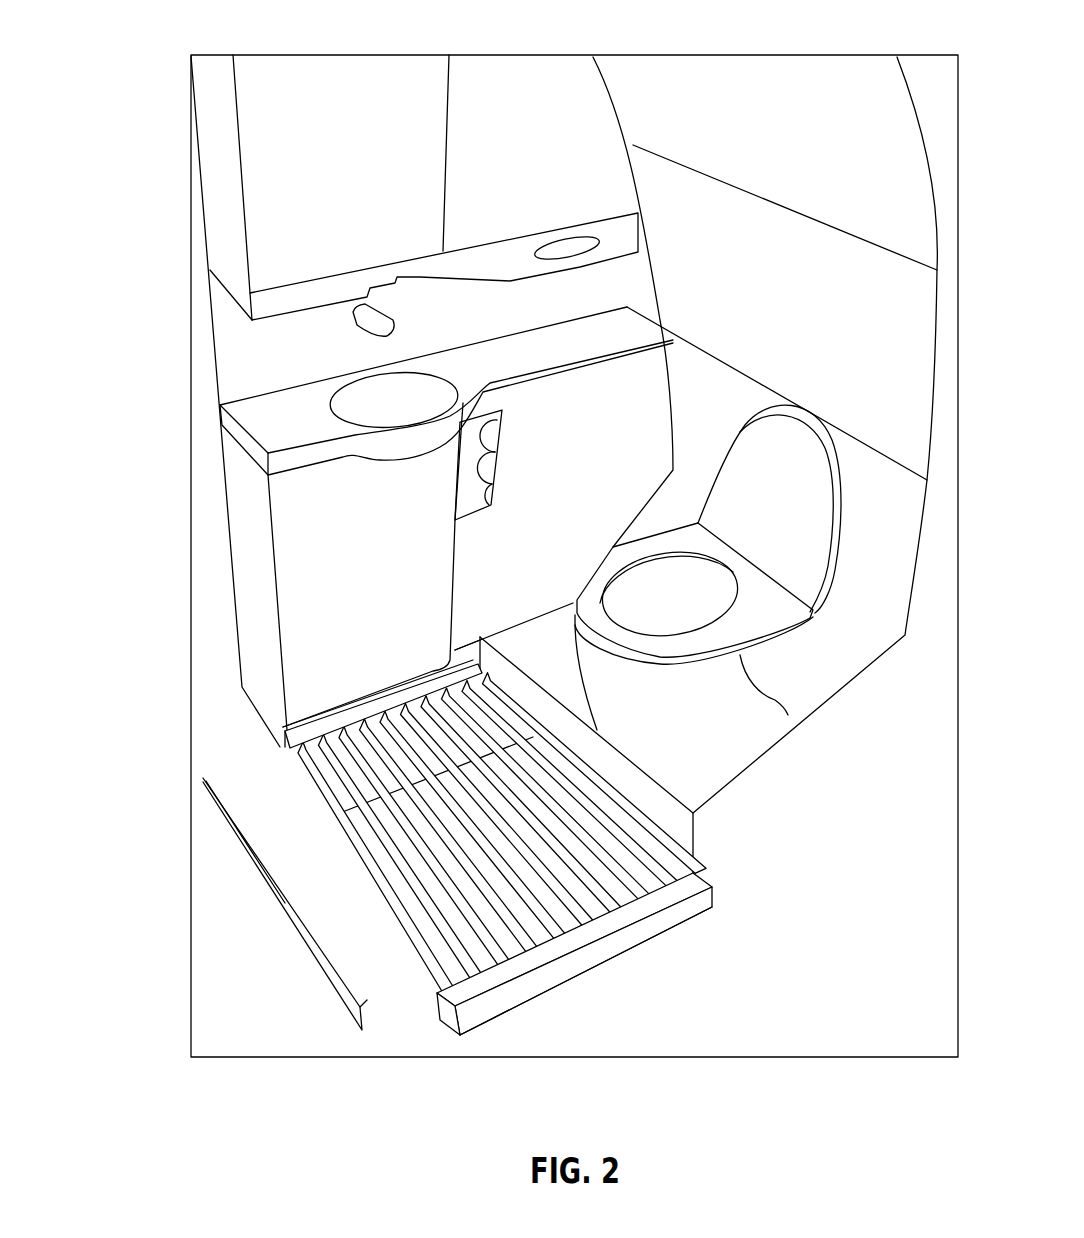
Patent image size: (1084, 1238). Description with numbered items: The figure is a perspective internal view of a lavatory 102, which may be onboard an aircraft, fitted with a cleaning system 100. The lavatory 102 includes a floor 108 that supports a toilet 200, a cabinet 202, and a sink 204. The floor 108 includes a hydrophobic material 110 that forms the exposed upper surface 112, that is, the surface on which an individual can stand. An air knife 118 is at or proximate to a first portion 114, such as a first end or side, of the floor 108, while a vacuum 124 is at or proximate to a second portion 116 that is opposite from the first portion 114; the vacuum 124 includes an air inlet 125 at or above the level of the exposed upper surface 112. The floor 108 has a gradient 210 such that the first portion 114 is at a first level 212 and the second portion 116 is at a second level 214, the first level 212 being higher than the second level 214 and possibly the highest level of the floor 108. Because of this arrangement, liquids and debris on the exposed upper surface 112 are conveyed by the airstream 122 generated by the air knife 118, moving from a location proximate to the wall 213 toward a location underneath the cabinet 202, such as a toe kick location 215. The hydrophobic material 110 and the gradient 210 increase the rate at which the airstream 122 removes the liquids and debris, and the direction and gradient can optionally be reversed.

The cleaning system 100 is at (493, 892).
The lavatory 102 is at (146, 141).
The floor 108 is at (705, 875).
The hydrophobic material 110 is at (677, 862).
The exposed upper surface 112 is at (481, 910).
The first portion 114 is at (433, 997).
The second portion 116 is at (280, 750).
The air knife 118 is at (693, 907).
The airstream 122 is at (318, 780).
The vacuum 124 is at (276, 735).
The air inlet 125 is at (373, 697).
The toilet 200 is at (748, 660).
The cabinet 202 is at (413, 558).
The sink 204 is at (425, 395).
The gradient 210 is at (265, 885).
The first level 212 is at (365, 1002).
The wall 213 is at (528, 1021).
The second level 214 is at (258, 904).
The toe kick location 215 is at (455, 668).